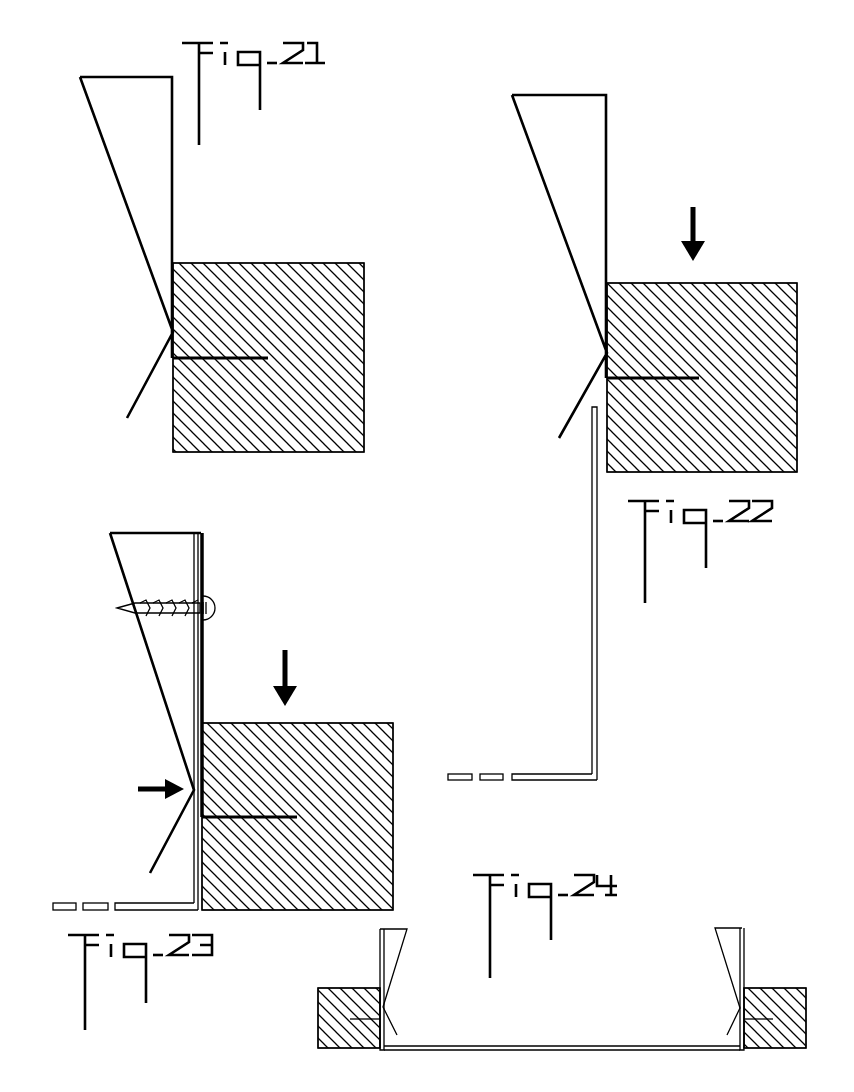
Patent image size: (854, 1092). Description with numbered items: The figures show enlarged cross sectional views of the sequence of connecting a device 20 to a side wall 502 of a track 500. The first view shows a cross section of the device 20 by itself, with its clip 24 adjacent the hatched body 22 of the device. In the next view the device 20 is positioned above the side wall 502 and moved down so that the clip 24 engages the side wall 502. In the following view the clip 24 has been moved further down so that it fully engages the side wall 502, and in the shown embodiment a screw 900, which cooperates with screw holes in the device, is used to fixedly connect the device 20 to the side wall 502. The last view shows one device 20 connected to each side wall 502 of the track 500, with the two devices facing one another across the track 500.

In FIG. 21, the device 20 is at (289, 153).
In FIG. 22, the device 20 is at (719, 170).
In FIG. 23, the device 20 is at (292, 575).
In FIG. 24, the device 20 is at (431, 965).
In FIG. 21, the workpiece / base block 22 is at (305, 263).
In FIG. 22, the workpiece / base block 22 is at (760, 283).
In FIG. 23, the workpiece / base block 22 is at (338, 723).
In FIG. 21, the clip 24 is at (68, 76).
In FIG. 22, the clip 24 is at (489, 103).
In FIG. 23, the clip 24 is at (93, 556).
In FIG. 22, the track 500 is at (505, 575).
In FIG. 23, the track 500 is at (111, 872).
In FIG. 24, the track 500 is at (568, 1030).
In FIG. 22, the side wall 502 is at (592, 617).
In FIG. 23, the side wall 502 is at (198, 575).
In FIG. 24, the side wall 502 is at (380, 965).
In FIG. 23, the screw 900 is at (160, 613).